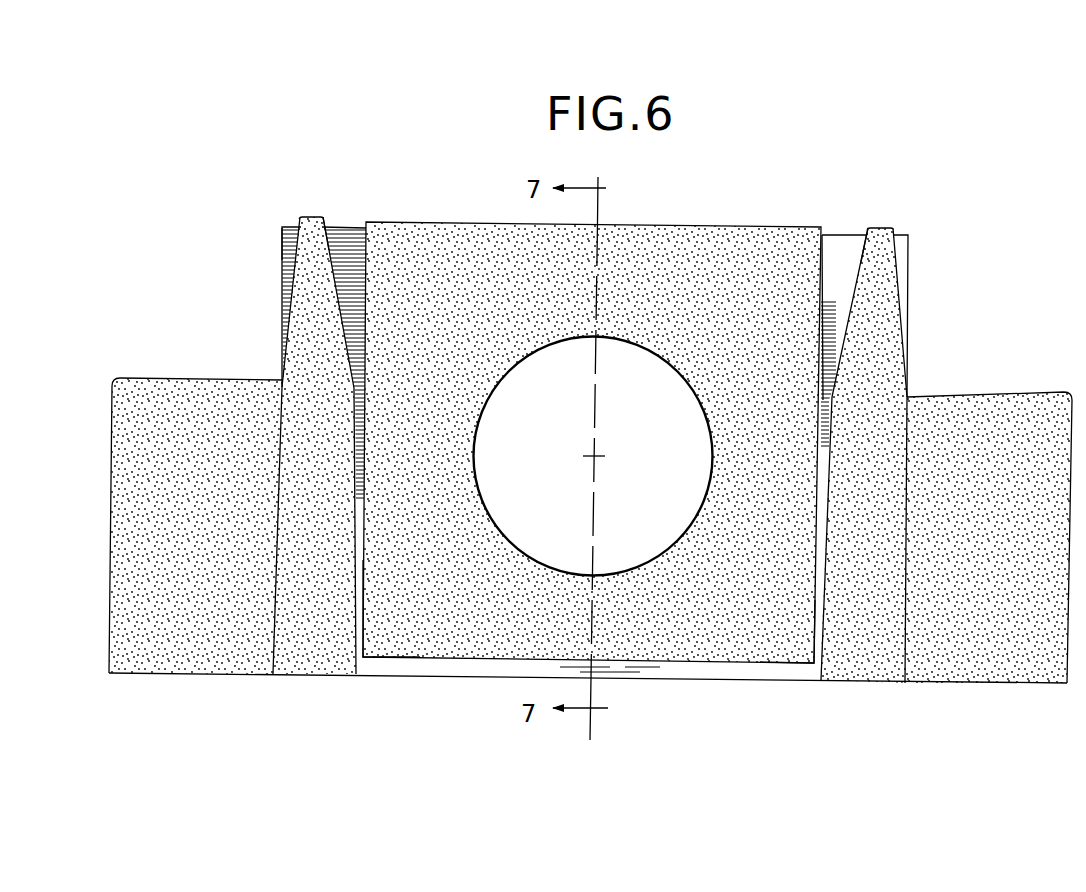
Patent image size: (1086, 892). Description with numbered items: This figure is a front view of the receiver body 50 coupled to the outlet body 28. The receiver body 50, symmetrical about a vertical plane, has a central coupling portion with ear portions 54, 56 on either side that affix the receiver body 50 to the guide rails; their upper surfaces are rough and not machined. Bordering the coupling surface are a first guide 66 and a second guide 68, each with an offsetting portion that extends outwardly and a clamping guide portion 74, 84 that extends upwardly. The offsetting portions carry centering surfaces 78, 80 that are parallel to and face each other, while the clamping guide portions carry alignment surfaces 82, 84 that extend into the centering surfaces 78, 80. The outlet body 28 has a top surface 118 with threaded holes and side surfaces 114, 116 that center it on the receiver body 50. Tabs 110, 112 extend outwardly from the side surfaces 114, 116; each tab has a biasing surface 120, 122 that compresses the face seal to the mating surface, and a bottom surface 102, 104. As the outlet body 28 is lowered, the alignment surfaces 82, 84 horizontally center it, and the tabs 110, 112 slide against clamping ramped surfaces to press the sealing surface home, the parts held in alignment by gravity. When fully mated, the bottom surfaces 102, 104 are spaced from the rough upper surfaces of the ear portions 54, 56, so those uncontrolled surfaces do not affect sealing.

The outlet body 28 is at (606, 468).
The receiver body 50 is at (850, 699).
The ear portion 54 is at (205, 684).
The ear portion 56 is at (1000, 696).
The first guide 66 is at (288, 468).
The second guide 68 is at (900, 474).
The clamping guide portion 74 is at (300, 211).
The centering surface 78 is at (353, 453).
The centering surface 80 is at (829, 450).
The alignment surface 82 is at (353, 240).
The clamping guide portion 84 is at (848, 248).
The bottom surface 102 is at (352, 387).
The bottom surface 104 is at (835, 385).
The tab 110 is at (322, 329).
The tab 112 is at (910, 314).
The side surface 114 is at (370, 567).
The side surface 116 is at (813, 602).
The top surface 118 is at (592, 449).
The biasing surface 120 is at (857, 283).
The biasing surface 122 is at (333, 250).